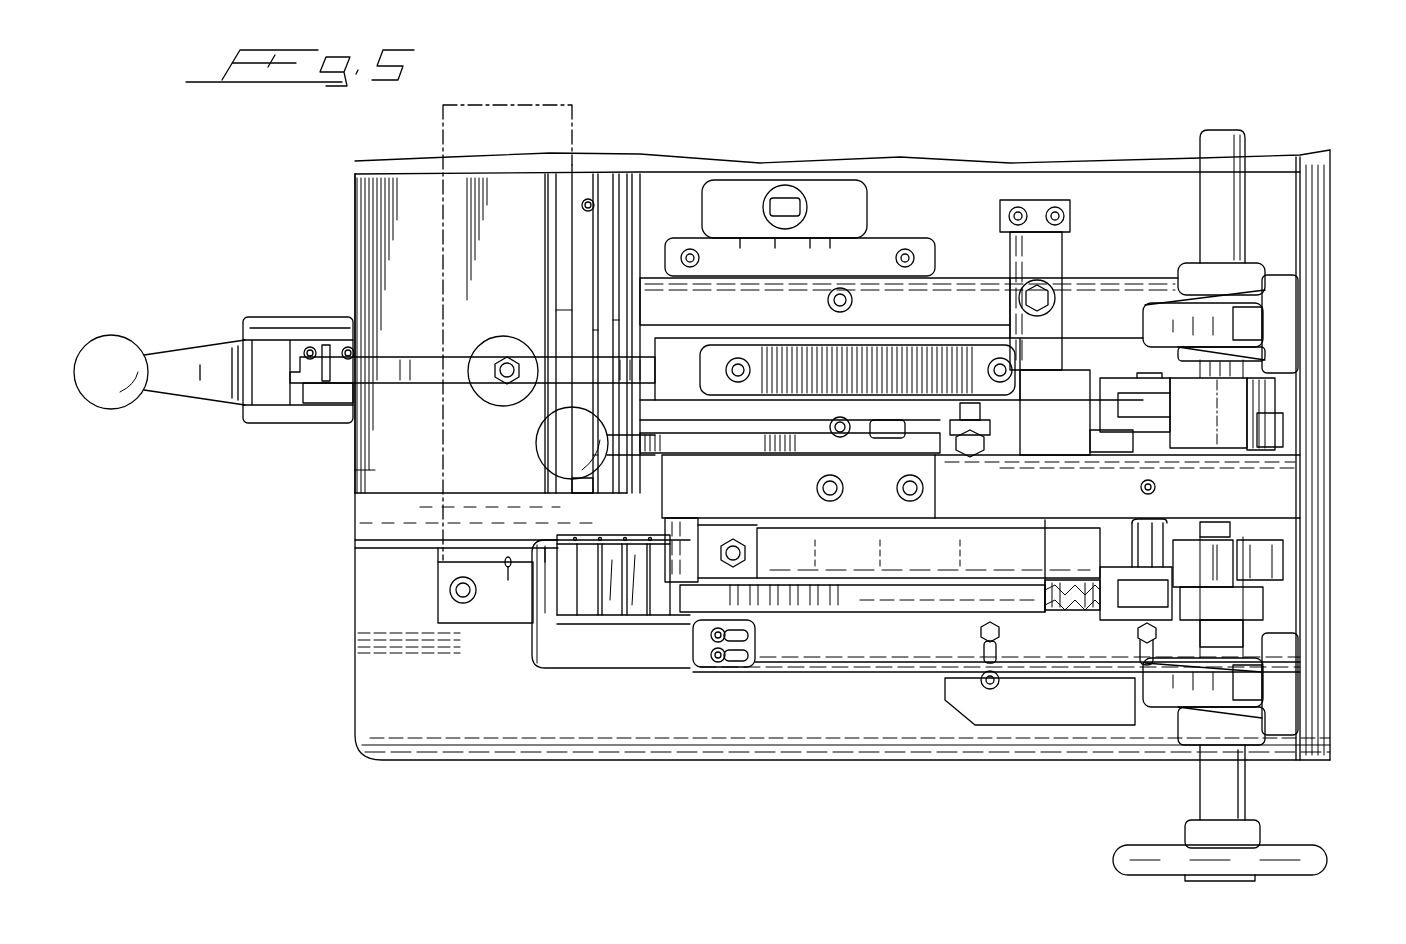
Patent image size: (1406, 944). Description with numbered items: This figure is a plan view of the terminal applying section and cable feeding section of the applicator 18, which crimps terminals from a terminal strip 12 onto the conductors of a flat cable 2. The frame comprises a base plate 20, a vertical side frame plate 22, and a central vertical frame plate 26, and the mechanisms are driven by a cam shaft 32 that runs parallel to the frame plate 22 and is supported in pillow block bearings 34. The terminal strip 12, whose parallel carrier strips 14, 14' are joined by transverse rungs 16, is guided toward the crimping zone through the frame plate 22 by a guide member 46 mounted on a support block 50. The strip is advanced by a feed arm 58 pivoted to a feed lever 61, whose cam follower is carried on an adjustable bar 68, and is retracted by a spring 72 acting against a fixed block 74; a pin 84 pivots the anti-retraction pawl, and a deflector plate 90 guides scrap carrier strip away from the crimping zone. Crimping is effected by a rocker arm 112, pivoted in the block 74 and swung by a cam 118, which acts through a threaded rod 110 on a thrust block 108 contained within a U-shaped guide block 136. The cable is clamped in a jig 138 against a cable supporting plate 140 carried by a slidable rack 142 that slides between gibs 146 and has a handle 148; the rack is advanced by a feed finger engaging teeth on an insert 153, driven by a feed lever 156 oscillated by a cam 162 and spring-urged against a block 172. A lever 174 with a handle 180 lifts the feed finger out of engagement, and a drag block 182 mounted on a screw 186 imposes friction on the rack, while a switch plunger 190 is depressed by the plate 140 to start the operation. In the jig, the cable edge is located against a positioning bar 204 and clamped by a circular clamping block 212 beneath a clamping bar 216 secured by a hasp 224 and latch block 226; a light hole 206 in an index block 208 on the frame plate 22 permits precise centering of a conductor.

The flat cable 2 is at (553, 103).
The terminal strip 12 is at (655, 624).
The carrier strip 14 is at (613, 559).
The carrier strip 14' is at (623, 639).
The rungs 16 is at (565, 624).
The applicator 18 is at (909, 66).
The base plate 20 is at (408, 750).
The vertical side frame plate 22 is at (1310, 240).
The central vertical frame plate 26 is at (1278, 492).
The cam shaft 32 is at (1228, 130).
The pillow block bearings 34 is at (1215, 690).
The right guide member 46 is at (845, 660).
The support block 50 is at (1040, 698).
The feed arm 58 is at (1075, 592).
The feed lever 61 is at (1112, 576).
The bar 68 is at (1143, 593).
The spring 72 is at (1066, 613).
The block 74 is at (1017, 590).
The pin 84 is at (1220, 325).
The deflector plate 90 is at (630, 660).
The thrust block 108 is at (702, 532).
The threaded rod 110 is at (736, 540).
The rocker arm 112 is at (785, 540).
The cam 118 is at (1280, 582).
The U-shaped guide block 136 is at (700, 632).
The jig 138 is at (345, 238).
The cable supporting plate 140 is at (360, 478).
The slidable rack 142 is at (275, 412).
The gibs 146 is at (909, 334).
The handle 148 is at (122, 392).
The insert 153 is at (952, 355).
The feed lever 156 is at (1115, 388).
The cam 162 is at (1268, 430).
The block 172 is at (1076, 412).
The lever 174 is at (784, 448).
The handle 180 is at (553, 443).
The drag block 182 is at (1012, 243).
The screw 186 is at (1045, 292).
The switch plunger 190 is at (799, 208).
The positioning bar 204 is at (583, 192).
The light hole 206 is at (508, 568).
The index block 208 is at (440, 605).
The circular clamping block 212 is at (507, 348).
The clamping bar 216 is at (392, 360).
The hasp 224 is at (327, 360).
The latch block 226 is at (330, 405).